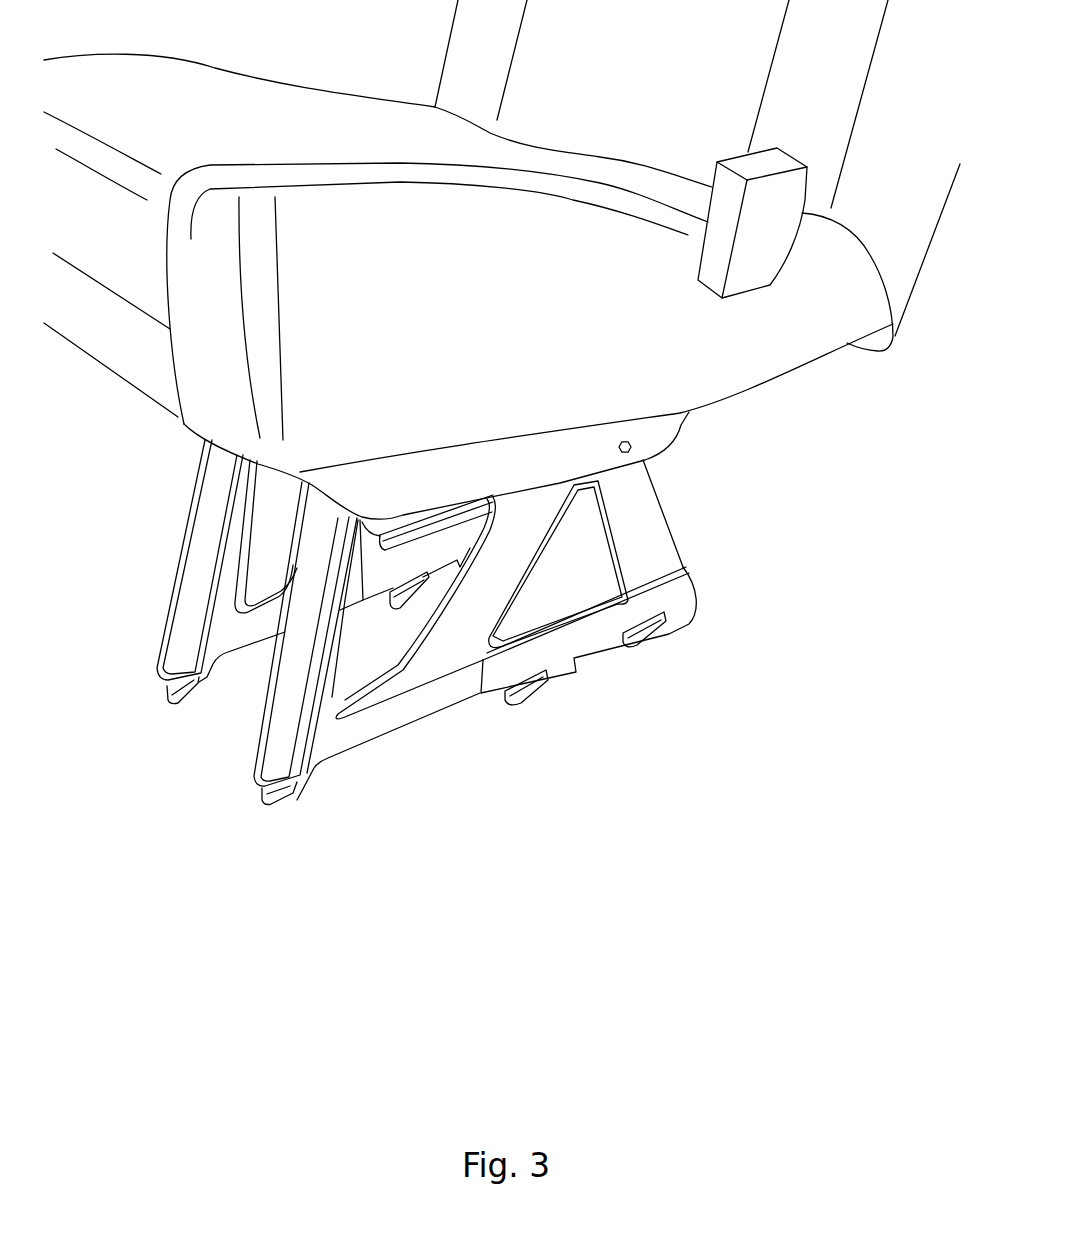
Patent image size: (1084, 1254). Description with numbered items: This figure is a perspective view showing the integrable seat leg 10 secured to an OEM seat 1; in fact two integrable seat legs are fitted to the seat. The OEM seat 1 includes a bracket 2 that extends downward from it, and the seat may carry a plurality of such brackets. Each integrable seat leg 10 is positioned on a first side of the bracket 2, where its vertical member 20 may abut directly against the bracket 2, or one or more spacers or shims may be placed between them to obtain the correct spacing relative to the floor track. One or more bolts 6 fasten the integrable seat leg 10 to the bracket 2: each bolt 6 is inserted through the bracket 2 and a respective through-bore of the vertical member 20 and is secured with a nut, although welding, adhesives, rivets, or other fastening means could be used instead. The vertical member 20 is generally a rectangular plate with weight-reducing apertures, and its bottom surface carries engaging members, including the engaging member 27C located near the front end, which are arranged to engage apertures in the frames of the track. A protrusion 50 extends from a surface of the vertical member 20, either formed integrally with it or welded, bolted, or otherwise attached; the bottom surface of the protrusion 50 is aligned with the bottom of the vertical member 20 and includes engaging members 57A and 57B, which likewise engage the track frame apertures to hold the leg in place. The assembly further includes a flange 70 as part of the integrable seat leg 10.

The OEM seat 1 is at (785, 334).
The bracket 2 is at (434, 478).
The bolt 6 is at (640, 444).
The integrable seat leg 10 is at (128, 617).
The vertical member 20 is at (662, 536).
The engaging member 27C is at (165, 693).
The protrusion 50 is at (682, 612).
The engaging member 57A is at (647, 647).
The engaging member 57B is at (526, 699).
The flange 70 is at (236, 497).